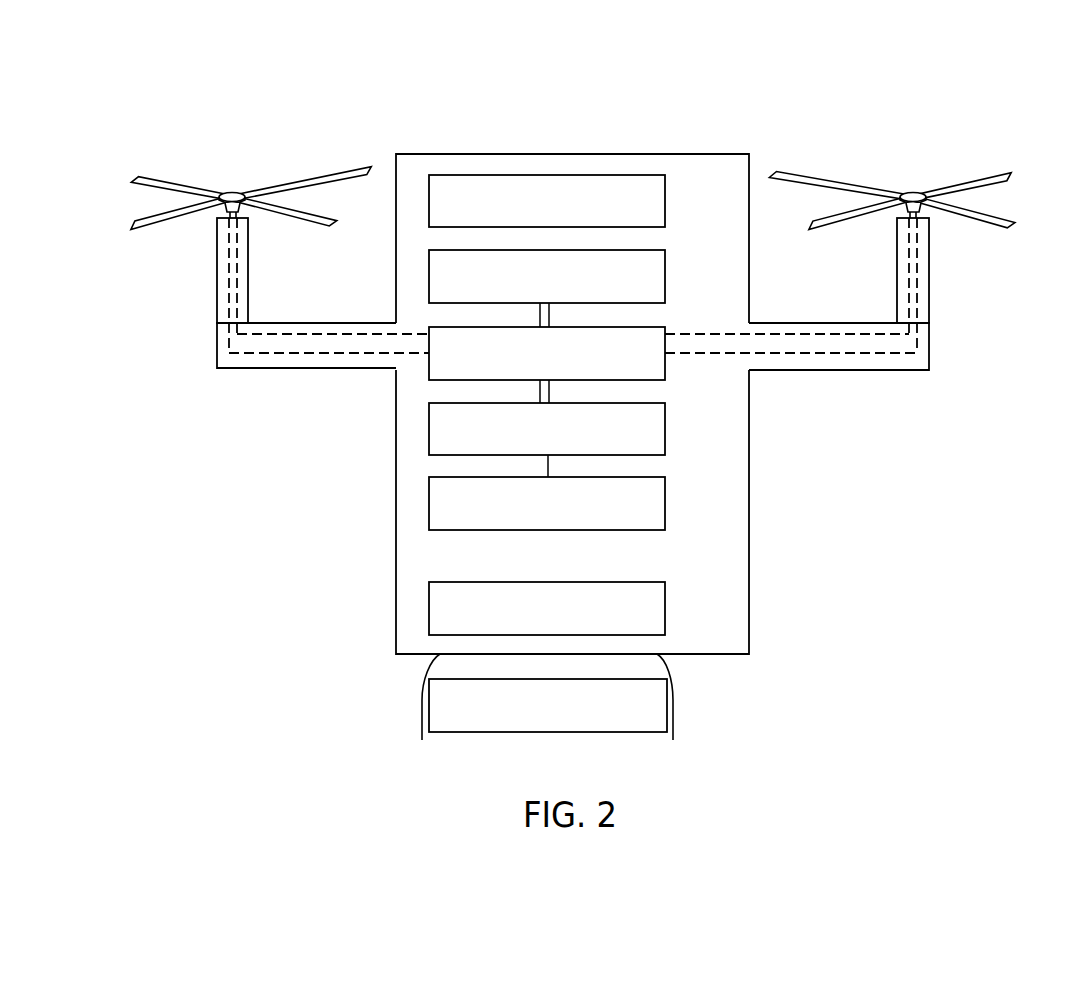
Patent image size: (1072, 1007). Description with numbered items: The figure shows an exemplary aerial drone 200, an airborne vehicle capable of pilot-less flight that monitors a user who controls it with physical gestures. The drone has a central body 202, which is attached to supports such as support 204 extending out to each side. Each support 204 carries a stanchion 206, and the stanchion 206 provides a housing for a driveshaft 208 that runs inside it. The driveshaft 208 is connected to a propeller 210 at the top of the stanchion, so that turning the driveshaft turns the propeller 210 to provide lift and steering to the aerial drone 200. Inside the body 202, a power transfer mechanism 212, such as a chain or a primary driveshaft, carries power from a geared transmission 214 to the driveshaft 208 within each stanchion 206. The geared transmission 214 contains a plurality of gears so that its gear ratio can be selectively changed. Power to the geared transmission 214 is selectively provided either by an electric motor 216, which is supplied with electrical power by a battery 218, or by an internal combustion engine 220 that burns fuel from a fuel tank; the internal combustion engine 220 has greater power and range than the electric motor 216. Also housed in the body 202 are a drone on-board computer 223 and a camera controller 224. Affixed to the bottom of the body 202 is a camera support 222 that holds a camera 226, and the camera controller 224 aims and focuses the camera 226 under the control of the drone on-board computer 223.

The aerial drone 200 is at (523, 410).
The body 202 is at (596, 546).
The support 204 is at (243, 368).
The stanchion 206 is at (217, 312).
The driveshaft 208 is at (228, 283).
The propeller 210 is at (128, 172).
The power transfer mechanism 212 is at (349, 357).
The geared transmission 214 is at (666, 363).
The electric motor 216 is at (666, 431).
The battery 218 is at (666, 506).
The internal combustion engine 220 is at (666, 278).
The camera support 222 is at (673, 712).
The drone on-board computer 223 is at (666, 203).
The camera controller 224 is at (666, 611).
The camera 226 is at (550, 732).